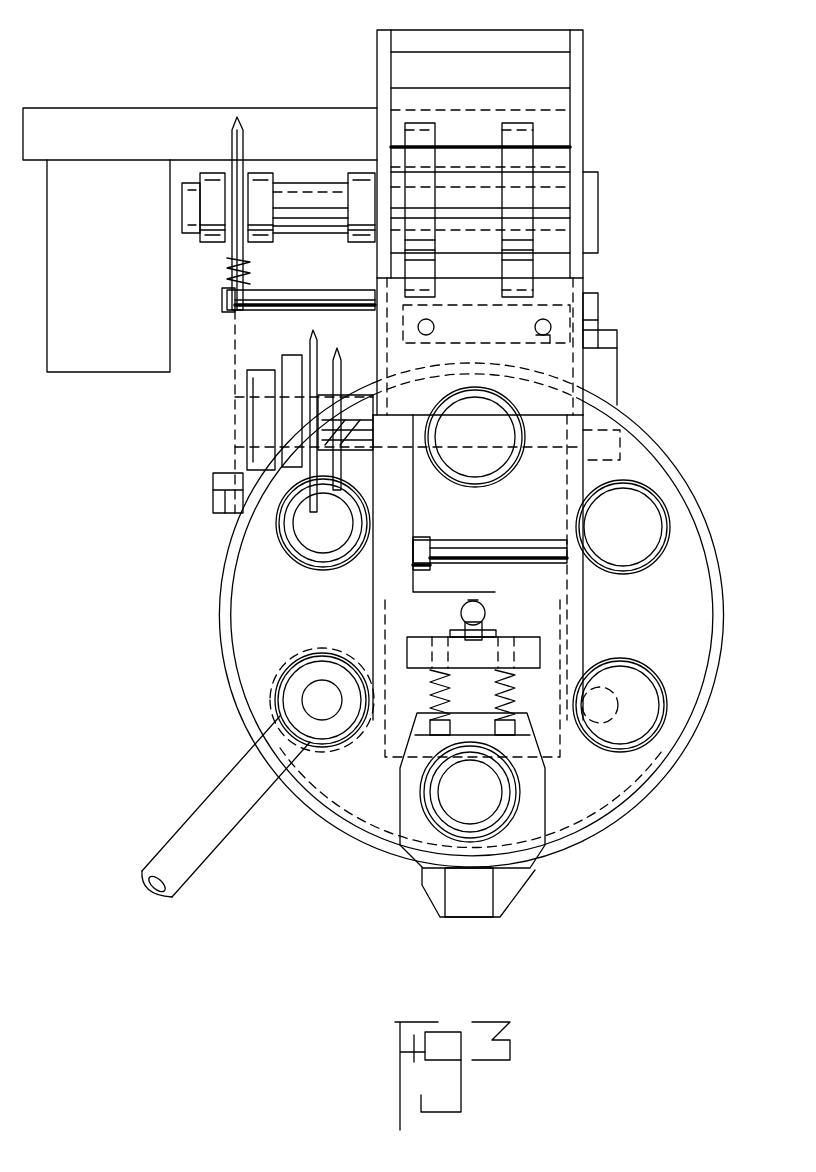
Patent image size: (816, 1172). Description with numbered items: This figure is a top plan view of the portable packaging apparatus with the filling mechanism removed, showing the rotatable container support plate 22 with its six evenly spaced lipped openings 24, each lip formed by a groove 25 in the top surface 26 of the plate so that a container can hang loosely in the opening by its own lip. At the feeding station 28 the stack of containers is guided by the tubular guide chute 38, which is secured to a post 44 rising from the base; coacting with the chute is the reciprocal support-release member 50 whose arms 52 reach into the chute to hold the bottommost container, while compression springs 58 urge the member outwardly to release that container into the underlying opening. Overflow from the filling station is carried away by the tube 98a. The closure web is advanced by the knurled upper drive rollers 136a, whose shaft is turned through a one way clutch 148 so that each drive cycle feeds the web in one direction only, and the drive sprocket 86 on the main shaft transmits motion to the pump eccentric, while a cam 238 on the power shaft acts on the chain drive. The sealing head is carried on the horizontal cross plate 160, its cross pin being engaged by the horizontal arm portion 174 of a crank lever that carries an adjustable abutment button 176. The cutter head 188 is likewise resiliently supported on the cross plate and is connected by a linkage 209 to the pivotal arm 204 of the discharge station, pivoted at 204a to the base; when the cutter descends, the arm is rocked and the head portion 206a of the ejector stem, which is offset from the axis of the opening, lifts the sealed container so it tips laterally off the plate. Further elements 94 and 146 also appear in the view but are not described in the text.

The container support plate 22 is at (655, 790).
The lipped openings 24 is at (640, 505).
The groove 25 is at (300, 575).
The top surface 26 is at (312, 705).
The feeding station 28 is at (520, 870).
The guide chute 38 is at (425, 855).
The post 44 is at (470, 905).
The support-release member 50 is at (545, 624).
The arms 52 is at (590, 805).
The compression springs 58 is at (515, 690).
The drive sprocket 86 is at (340, 372).
The pin 94 is at (309, 346).
The tube 98a is at (205, 808).
The upper drive rollers 136a is at (530, 215).
The plate 146 is at (258, 437).
The one way clutch 148 is at (238, 128).
The cross plate 160 is at (486, 635).
The arm portion 174 is at (446, 592).
The abutment button 176 is at (460, 616).
The cutter head 188 is at (582, 292).
The pivotal arm 204 is at (605, 380).
The pivot 204a is at (646, 417).
The head portion 206a is at (680, 772).
The linkage 209 is at (600, 340).
The cam 238 is at (286, 372).